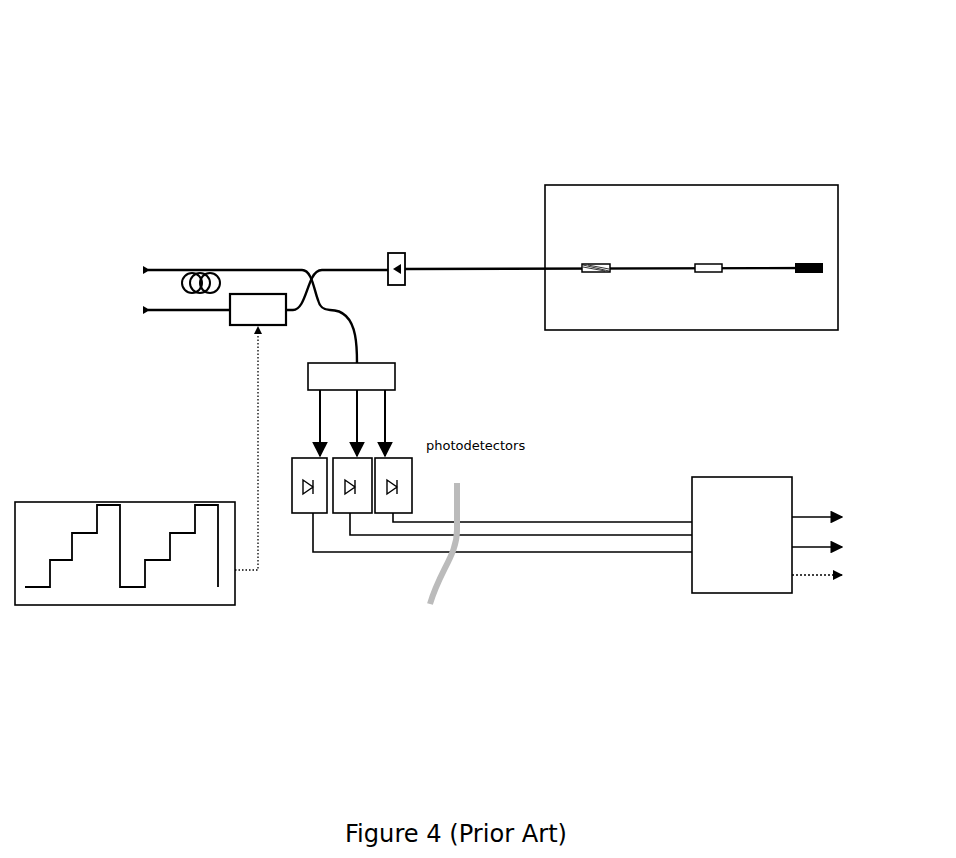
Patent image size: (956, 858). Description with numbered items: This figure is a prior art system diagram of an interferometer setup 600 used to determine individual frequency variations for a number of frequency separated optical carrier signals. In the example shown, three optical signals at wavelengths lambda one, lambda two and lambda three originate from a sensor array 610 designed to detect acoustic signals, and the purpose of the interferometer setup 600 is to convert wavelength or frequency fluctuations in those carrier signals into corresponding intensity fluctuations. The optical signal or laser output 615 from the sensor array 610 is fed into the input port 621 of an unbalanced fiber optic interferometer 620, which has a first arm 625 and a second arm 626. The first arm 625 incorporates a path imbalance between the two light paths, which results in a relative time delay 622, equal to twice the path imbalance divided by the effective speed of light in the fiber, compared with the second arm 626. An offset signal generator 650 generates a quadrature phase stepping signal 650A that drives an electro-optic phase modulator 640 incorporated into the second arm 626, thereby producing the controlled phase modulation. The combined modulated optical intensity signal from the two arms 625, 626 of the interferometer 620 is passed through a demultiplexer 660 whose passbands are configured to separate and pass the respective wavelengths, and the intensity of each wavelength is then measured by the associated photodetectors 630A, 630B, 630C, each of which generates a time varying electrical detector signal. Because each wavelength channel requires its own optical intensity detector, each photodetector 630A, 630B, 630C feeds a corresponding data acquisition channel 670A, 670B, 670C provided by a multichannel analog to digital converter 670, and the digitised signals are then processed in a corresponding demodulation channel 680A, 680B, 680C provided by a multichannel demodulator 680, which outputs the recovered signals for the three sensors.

The interferometer setup 600 is at (142, 132).
The sensor array 610 is at (660, 184).
The optical signal or laser output 615 is at (496, 267).
The unbalanced fiber optic interferometer 620 is at (305, 255).
The input port 621 is at (398, 252).
The relative time delay 622 is at (195, 240).
The first arm 625 is at (257, 268).
The second arm 626 is at (150, 311).
The electro-optic phase modulator (EOM) 640 is at (232, 322).
The offset signal generator 650 is at (40, 501).
The quadrature phase stepping signal 650A is at (257, 420).
The demultiplexer 660 is at (385, 362).
The photodetector 630A is at (404, 457).
The photodetector 630B is at (356, 515).
The photodetector 630C is at (306, 515).
The multichannel analog to digital converter 670 is at (462, 468).
The data acquisition channel 670A is at (497, 520).
The data acquisition channel 670B is at (481, 538).
The data acquisition channel 670C is at (492, 554).
The multichannel demodulator 680 is at (732, 475).
The demodulation channel 680A is at (803, 516).
The demodulation channel 680B is at (820, 550).
The demodulation channel 680C is at (828, 578).